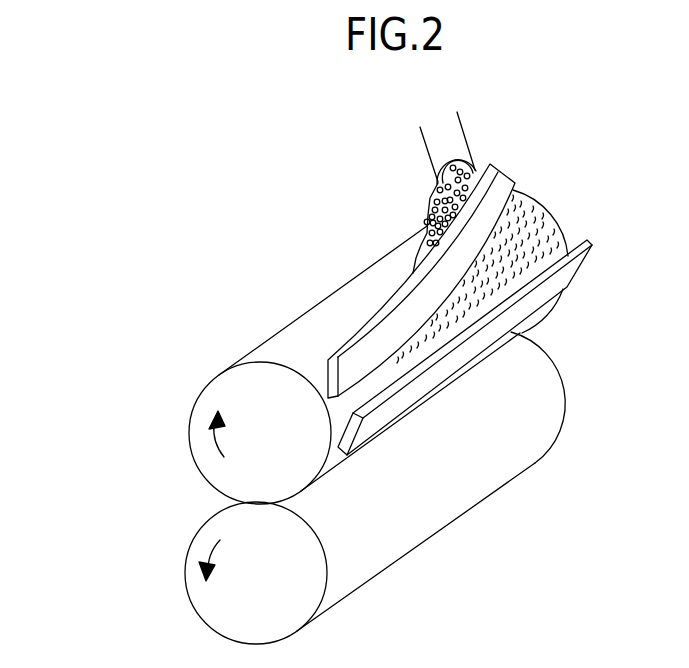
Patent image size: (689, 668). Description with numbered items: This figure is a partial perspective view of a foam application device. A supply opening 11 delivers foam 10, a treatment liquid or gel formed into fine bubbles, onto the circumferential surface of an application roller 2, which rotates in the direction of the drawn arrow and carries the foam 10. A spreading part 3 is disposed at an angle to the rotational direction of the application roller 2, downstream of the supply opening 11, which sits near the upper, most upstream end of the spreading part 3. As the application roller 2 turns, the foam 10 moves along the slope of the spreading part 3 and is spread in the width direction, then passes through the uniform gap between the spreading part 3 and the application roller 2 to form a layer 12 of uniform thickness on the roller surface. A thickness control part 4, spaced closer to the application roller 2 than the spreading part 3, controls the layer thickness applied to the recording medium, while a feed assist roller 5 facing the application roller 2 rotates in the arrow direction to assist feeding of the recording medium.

The application roller 2 is at (298, 338).
The spreading part 3 is at (502, 178).
The thickness control part 4 is at (580, 263).
The feed assist roller 5 is at (495, 474).
The foam 10 is at (433, 195).
The supply opening 11 is at (462, 123).
The layer 12 is at (543, 208).